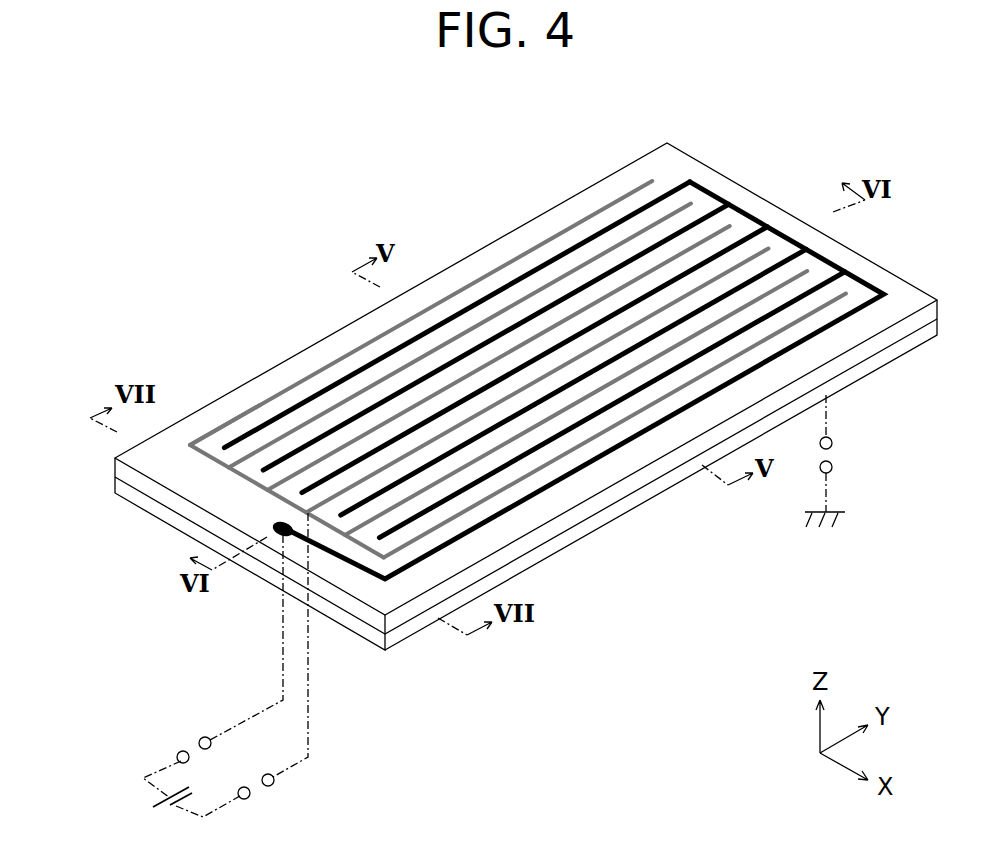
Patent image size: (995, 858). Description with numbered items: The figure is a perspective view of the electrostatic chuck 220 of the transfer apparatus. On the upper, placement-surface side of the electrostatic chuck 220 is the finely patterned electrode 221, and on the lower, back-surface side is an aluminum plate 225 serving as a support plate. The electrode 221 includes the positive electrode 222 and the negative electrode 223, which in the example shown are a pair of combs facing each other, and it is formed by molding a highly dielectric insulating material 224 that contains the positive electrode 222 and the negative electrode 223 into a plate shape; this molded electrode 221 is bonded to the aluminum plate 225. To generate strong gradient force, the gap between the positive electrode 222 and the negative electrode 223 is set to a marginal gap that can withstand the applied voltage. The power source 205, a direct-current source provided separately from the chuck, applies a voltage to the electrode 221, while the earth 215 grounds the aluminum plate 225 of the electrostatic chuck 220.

The electrostatic chuck 220 is at (693, 155).
The electrode 221 is at (555, 235).
The positive electrode 222 is at (530, 502).
The negative electrode 223 is at (230, 420).
The highly dielectric insulating material 224 is at (470, 268).
The aluminum plate 225 is at (640, 493).
The earth 215 is at (826, 412).
The power source 205 is at (157, 792).